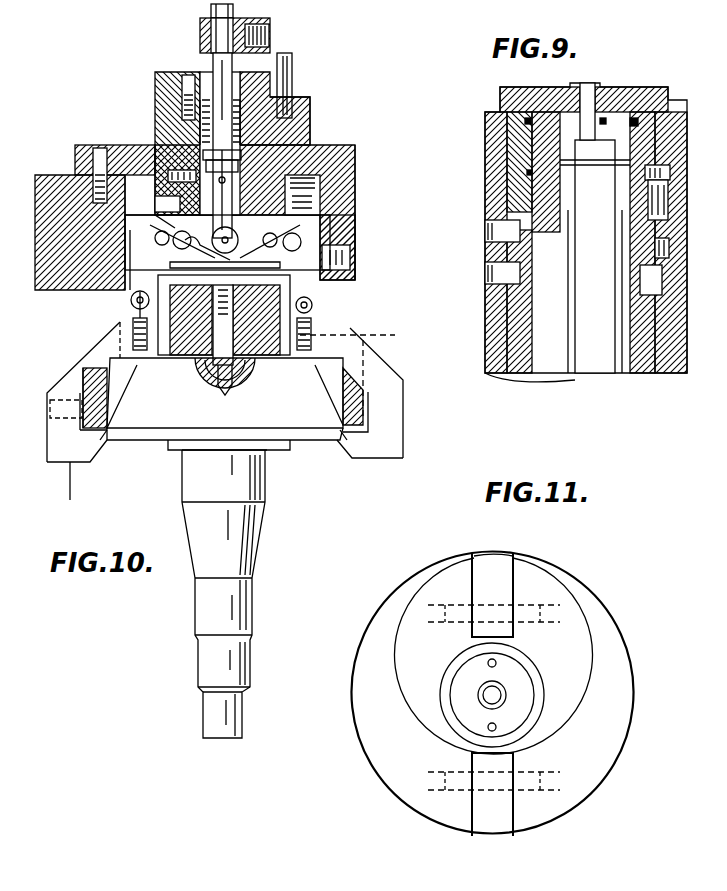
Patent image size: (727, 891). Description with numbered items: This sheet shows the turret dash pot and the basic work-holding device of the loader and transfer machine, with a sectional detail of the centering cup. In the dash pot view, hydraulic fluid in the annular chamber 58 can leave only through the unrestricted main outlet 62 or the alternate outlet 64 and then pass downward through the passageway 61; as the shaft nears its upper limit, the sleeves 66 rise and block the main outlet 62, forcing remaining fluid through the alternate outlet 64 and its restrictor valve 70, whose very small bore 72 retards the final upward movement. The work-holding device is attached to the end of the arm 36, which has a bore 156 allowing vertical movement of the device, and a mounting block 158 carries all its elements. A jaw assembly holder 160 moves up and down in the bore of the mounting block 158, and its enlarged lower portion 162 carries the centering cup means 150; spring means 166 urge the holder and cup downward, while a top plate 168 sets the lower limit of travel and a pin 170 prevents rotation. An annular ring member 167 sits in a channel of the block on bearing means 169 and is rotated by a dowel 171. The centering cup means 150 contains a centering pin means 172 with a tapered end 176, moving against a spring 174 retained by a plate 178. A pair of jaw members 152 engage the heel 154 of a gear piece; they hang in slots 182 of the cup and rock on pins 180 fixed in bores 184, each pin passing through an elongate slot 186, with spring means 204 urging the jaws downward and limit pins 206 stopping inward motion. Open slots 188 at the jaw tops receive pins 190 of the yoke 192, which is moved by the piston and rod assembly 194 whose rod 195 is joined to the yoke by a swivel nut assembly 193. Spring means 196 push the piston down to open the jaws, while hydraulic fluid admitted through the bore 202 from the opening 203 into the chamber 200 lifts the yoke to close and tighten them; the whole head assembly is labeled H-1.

In FIG. 10, the arm 36 is at (66, 170).
In FIG. 9, the annular chamber 58 is at (570, 257).
In FIG. 9, the passageway 61 is at (668, 322).
In FIG. 9, the main outlet 62 is at (595, 228).
In FIG. 9, the alternate outlet 64 is at (670, 180).
In FIG. 9, the sleeves 66 is at (655, 290).
In FIG. 9, the restrictor valve 70 is at (668, 215).
In FIG. 9, the small bore 72 is at (672, 248).
In FIG. 10, the centering cup means 150 is at (360, 405).
In FIG. 10, the jaw members 152 is at (405, 432).
In FIG. 10, the heel 154 is at (292, 450).
In FIG. 10, the bore 156 is at (120, 292).
In FIG. 10, the mounting block 158 is at (310, 100).
In FIG. 10, the jaw assembly holder 160 is at (180, 125).
In FIG. 10, the enlarged lower portion 162 is at (335, 244).
In FIG. 10, the spring means 166 is at (330, 212).
In FIG. 10, the annular ring member 167 is at (125, 204).
In FIG. 10, the top plate 168 is at (165, 82).
In FIG. 10, the bearing means 169 is at (170, 172).
In FIG. 10, the pin 170 is at (292, 66).
In FIG. 10, the dowel 171 is at (80, 232).
In FIG. 10, the centering pin means 172 is at (223, 399).
In FIG. 10, the spring 174 is at (256, 320).
In FIG. 10, the tapered end 176 is at (232, 388).
In FIG. 10, the plate 178 is at (224, 315).
In FIG. 10, the pin 180 is at (132, 312).
In FIG. 11, the slots 182 is at (505, 560).
In FIG. 11, the bores 184 is at (455, 635).
In FIG. 10, the elongate slot 186 is at (312, 300).
In FIG. 10, the open slots 188 is at (175, 248).
In FIG. 10, the pins 190 is at (80, 285).
In FIG. 10, the yoke 192 is at (270, 262).
In FIG. 10, the swivel nut assembly 193 is at (195, 206).
In FIG. 10, the piston and rod assembly 194 is at (252, 150).
In FIG. 10, the rod 195 is at (320, 198).
In FIG. 10, the spring means 196 is at (275, 132).
In FIG. 10, the chamber 200 is at (300, 162).
In FIG. 10, the bore 202 is at (200, 35).
In FIG. 10, the opening 203 is at (270, 38).
In FIG. 10, the spring means 204 is at (363, 374).
In FIG. 10, the limit pins 206 is at (62, 483).
In FIG. 10, the head assembly H-1 is at (374, 166).